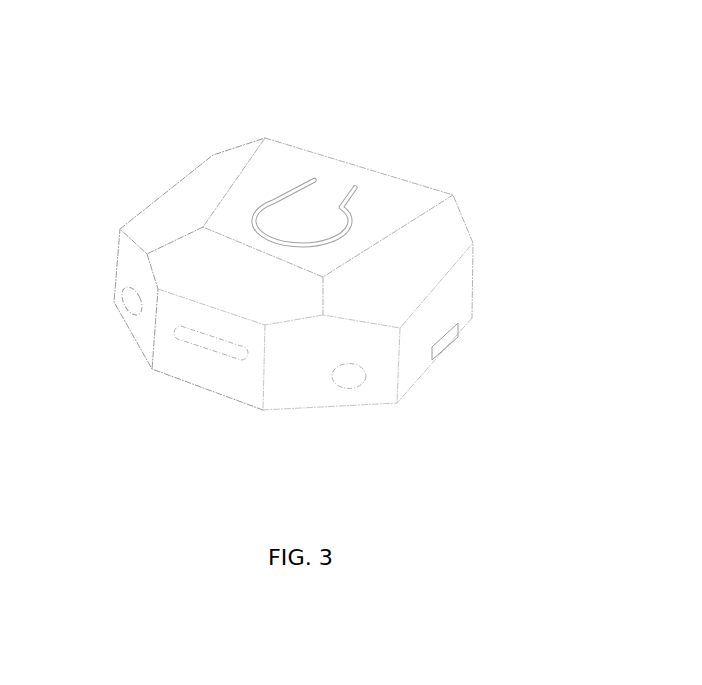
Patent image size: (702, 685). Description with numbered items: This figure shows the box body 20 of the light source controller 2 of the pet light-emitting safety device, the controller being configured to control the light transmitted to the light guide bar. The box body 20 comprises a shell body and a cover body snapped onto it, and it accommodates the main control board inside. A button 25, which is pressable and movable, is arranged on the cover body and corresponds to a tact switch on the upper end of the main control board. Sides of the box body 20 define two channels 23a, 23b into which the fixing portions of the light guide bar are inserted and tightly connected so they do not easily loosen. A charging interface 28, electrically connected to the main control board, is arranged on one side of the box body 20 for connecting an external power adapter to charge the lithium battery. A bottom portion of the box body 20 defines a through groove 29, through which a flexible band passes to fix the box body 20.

The light source controller 2 is at (302, 67).
The box body 20 is at (472, 230).
The button 25 is at (303, 220).
The channel 23a is at (125, 303).
The channel 23b is at (349, 377).
The charging interface 28 is at (210, 348).
The through groove 29 is at (442, 342).